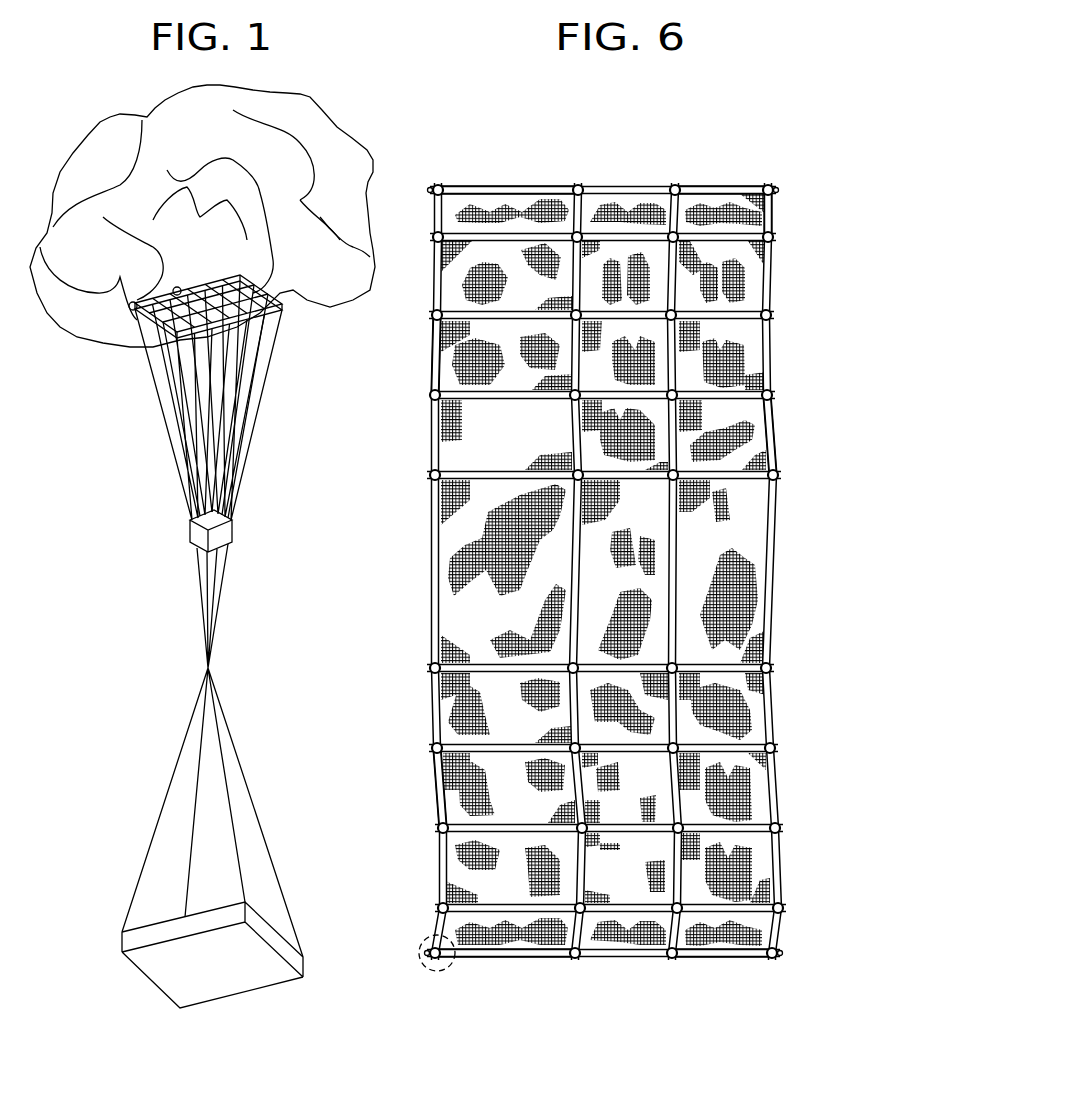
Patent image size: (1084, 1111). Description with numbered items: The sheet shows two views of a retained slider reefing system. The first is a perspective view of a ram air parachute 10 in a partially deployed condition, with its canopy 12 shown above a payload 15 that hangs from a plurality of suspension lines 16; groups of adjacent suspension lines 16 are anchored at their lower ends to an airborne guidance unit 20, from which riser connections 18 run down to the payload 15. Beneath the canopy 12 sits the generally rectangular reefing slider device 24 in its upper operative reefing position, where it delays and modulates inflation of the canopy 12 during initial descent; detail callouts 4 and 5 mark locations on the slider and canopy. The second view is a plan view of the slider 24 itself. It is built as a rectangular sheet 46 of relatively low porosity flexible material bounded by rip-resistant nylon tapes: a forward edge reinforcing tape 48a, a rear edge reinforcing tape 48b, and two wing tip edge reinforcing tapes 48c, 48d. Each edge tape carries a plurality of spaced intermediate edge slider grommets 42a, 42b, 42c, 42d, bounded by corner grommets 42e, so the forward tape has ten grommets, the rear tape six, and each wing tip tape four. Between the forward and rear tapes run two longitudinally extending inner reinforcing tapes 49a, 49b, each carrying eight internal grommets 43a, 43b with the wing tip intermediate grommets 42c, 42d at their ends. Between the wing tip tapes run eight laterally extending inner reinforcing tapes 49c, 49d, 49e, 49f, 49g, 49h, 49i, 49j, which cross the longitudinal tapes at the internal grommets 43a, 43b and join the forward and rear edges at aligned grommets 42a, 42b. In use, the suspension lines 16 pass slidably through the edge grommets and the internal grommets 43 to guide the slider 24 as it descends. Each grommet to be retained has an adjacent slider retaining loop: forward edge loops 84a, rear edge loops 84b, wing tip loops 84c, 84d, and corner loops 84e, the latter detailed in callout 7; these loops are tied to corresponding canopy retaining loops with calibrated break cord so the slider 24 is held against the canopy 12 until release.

In FIG. 1, the ram air parachute 10 is at (97, 98).
In FIG. 1, the canopy 12 is at (296, 112).
In FIG. 1, the detail reference FIG. 4 is at (177, 287).
In FIG. 1, the detail reference FIG. 5 is at (129, 305).
In FIG. 1, the reefing slider device 24 is at (290, 325).
In FIG. 6, the reefing slider device 24 is at (627, 108).
In FIG. 1, the suspension lines 16 is at (262, 410).
In FIG. 1, the riser lines 18 is at (240, 505).
In FIG. 1, the airborne guidance unit 20 is at (190, 528).
In FIG. 1, the payload 15 is at (218, 976).
In FIG. 6, the detail reference FIG. 7 is at (427, 938).
In FIG. 6, the intermediate edge slider grommets 42a is at (772, 237).
In FIG. 6, the intermediate edge slider grommets 42b is at (431, 395).
In FIG. 6, the intermediate edge slider grommets 42c is at (572, 185).
In FIG. 6, the intermediate edge slider grommets 42d is at (572, 956).
In FIG. 6, the corner grommets 42e is at (441, 185).
In FIG. 6, the grommets 43 is at (610, 479).
In FIG. 6, the internal grommets 43a is at (603, 320).
In FIG. 6, the internal grommets 43b is at (565, 399).
In FIG. 6, the rectangular sheet 46 is at (528, 608).
In FIG. 6, the forward edge reinforcing tape 48a is at (772, 260).
In FIG. 6, the rear edge reinforcing tape 48b is at (433, 540).
In FIG. 6, the wing tip edge reinforcing tape 48c is at (640, 186).
In FIG. 6, the wing tip edge reinforcing tape 48d is at (630, 958).
In FIG. 6, the longitudinally extending inner reinforcing tape 49a is at (680, 535).
In FIG. 6, the longitudinally extending inner reinforcing tape 49b is at (585, 578).
In FIG. 6, the laterally extending inner reinforcing tape 49c is at (512, 235).
In FIG. 6, the laterally extending inner reinforcing tape 49d is at (490, 318).
In FIG. 6, the laterally extending inner reinforcing tape 49e is at (487, 397).
In FIG. 6, the laterally extending inner reinforcing tape 49f is at (485, 476).
In FIG. 6, the laterally extending inner reinforcing tape 49g is at (480, 660).
In FIG. 6, the laterally extending inner reinforcing tape 49h is at (515, 745).
In FIG. 6, the laterally extending inner reinforcing tape 49i is at (520, 823).
In FIG. 6, the laterally extending inner reinforcing tape 49j is at (503, 912).
In FIG. 6, the forward edge slider retaining loops 84a is at (771, 315).
In FIG. 6, the rear edge slider retaining loops 84b is at (432, 315).
In FIG. 6, the wing tip retaining loops 84c is at (578, 185).
In FIG. 6, the wing tip retaining loops 84d is at (578, 958).
In FIG. 6, the corner retaining loops 84e is at (436, 187).